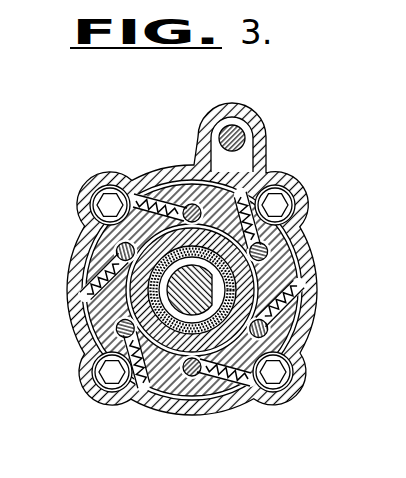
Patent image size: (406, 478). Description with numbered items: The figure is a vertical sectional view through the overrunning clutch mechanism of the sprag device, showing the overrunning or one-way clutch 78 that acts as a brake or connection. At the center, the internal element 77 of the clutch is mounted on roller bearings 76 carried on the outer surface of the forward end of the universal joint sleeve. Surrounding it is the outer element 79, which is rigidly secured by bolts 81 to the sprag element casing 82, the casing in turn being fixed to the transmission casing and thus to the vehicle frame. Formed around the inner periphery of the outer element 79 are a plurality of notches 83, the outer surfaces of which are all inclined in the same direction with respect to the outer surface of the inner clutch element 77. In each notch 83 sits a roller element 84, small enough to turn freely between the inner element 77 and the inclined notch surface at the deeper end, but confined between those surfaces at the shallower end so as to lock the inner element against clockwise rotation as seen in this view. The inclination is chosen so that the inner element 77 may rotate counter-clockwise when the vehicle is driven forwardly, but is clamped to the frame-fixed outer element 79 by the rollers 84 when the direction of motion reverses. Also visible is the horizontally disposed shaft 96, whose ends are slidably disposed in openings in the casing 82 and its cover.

The roller bearings 76 is at (180, 318).
The internal element 77 is at (103, 318).
The overrunning clutch 78 is at (85, 263).
The outer element 79 is at (302, 333).
The bolts 81 is at (103, 197).
The sprag element casing 82 is at (148, 168).
The notches 83 is at (302, 270).
The roller element 84 is at (303, 228).
The shaft 96 is at (244, 137).